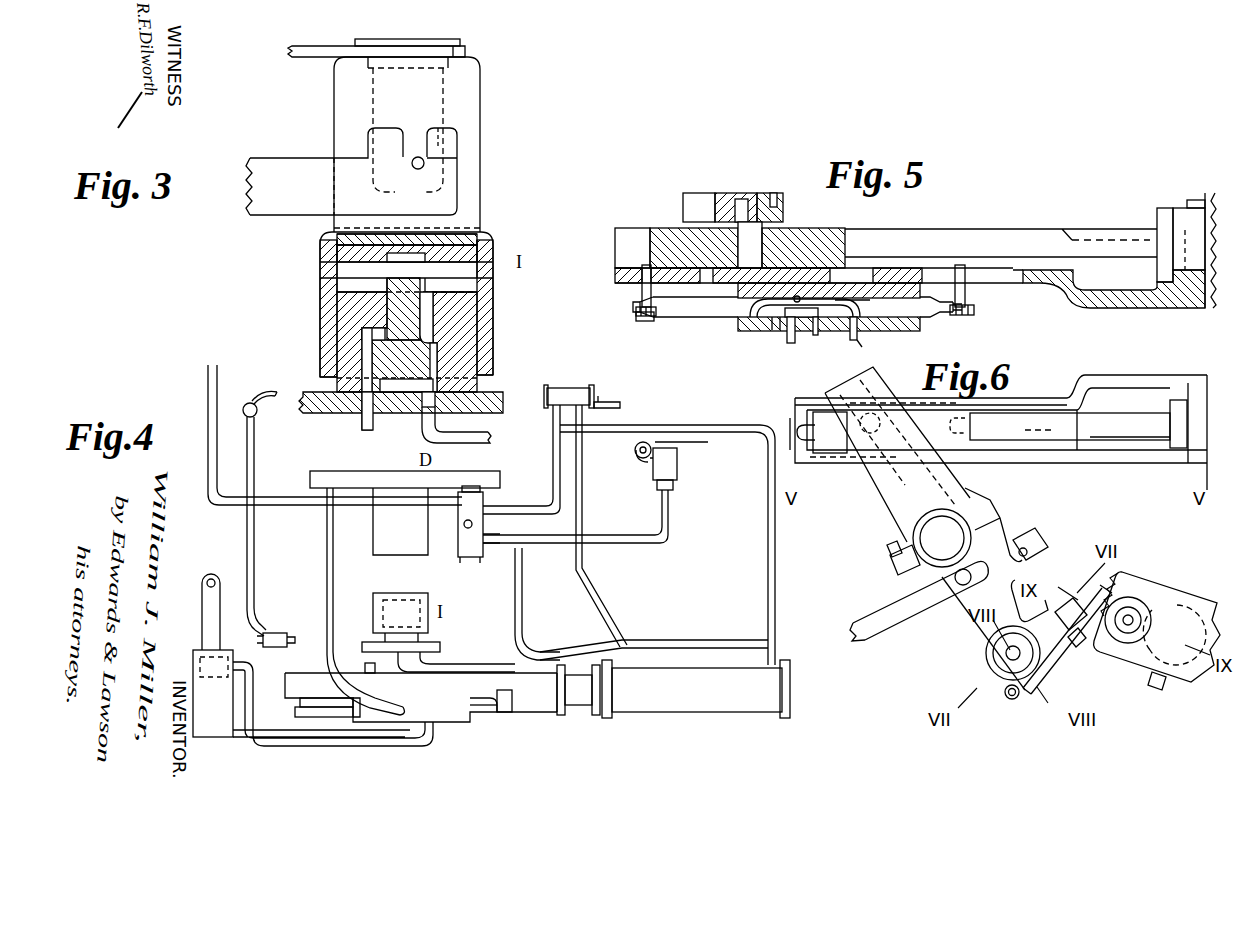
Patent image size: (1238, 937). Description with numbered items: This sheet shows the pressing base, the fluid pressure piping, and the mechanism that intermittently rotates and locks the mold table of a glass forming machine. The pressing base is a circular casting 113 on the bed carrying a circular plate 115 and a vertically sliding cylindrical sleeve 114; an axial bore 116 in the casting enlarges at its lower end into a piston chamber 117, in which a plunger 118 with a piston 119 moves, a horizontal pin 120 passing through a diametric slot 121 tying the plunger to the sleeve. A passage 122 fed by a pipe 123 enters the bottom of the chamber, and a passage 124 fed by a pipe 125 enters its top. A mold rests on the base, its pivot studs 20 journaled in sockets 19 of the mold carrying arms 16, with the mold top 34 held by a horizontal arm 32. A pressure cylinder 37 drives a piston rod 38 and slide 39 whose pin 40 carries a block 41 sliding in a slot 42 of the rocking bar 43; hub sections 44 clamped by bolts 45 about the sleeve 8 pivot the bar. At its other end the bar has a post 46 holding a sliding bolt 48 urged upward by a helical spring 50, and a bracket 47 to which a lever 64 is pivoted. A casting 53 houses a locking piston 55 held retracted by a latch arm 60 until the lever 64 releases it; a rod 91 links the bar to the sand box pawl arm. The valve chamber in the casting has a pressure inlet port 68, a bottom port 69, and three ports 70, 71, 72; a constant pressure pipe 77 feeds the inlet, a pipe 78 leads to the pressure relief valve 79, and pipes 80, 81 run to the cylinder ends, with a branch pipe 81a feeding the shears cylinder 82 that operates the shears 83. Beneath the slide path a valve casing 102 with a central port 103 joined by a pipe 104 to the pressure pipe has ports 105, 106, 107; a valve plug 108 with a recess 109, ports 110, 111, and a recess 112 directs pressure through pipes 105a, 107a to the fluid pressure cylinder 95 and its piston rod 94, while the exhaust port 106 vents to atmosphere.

In FIG. 6, the sleeve 8 is at (936, 464).
In FIG. 3, the mold carrying arms 16 is at (351, 171).
In FIG. 3, the journal sockets 19 is at (427, 147).
In FIG. 3, the pivot studs 20 is at (425, 165).
In FIG. 3, the horizontal arm 32 is at (306, 46).
In FIG. 3, the mold top 34 is at (396, 32).
In FIG. 4, the pressure cylinder 37 is at (696, 689).
In FIG. 5, the pressure cylinder 37 is at (1179, 208).
In FIG. 6, the pressure cylinder 37 is at (1180, 400).
In FIG. 4, the piston rod 38 is at (555, 712).
In FIG. 5, the piston rod 38 is at (976, 232).
In FIG. 6, the piston rod 38 is at (1117, 420).
In FIG. 5, the slide 39 is at (808, 228).
In FIG. 6, the slide 39 is at (868, 458).
In FIG. 4, the pin 40 is at (374, 668).
In FIG. 5, the pin 40 is at (700, 232).
In FIG. 6, the pin 40 is at (880, 478).
In FIG. 5, the block 41 is at (775, 205).
In FIG. 6, the block 41 is at (838, 432).
In FIG. 5, the slot 42 is at (745, 195).
In FIG. 6, the slot 42 is at (895, 505).
In FIG. 5, the rocking bar 43 is at (708, 193).
In FIG. 6, the rocking bar 43 is at (900, 520).
In FIG. 6, the hub sections 44 is at (897, 568).
In FIG. 6, the bolts 45 is at (887, 550).
In FIG. 6, the post 46 is at (1008, 655).
In FIG. 6, the bracket 47 is at (1070, 596).
In FIG. 6, the sliding bolt 48 is at (1010, 657).
In FIG. 6, the helical spring 50 is at (1006, 696).
In FIG. 6, the casting 53 is at (1167, 583).
In FIG. 6, the piston 55 is at (1127, 626).
In FIG. 6, the latch arm 60 is at (1130, 612).
In FIG. 6, the lever 64 is at (1067, 639).
In FIG. 4, the pressure inlet port 68 is at (483, 500).
In FIG. 4, the port 69 is at (466, 558).
In FIG. 4, the port 70 is at (474, 510).
In FIG. 4, the port 71 is at (464, 526).
In FIG. 4, the port 72 is at (478, 542).
In FIG. 4, the constant fluid pressure pipe 77 is at (308, 497).
In FIG. 4, the pipe 78 is at (500, 557).
In FIG. 4, the pressure relief valve 79 is at (677, 468).
In FIG. 4, the pipe 80 is at (553, 452).
In FIG. 4, the pipe 81 is at (530, 531).
In FIG. 4, the branch pipe 81a is at (585, 510).
In FIG. 4, the shears cylinder 82 is at (575, 381).
In FIG. 4, the shears 83 is at (618, 397).
In FIG. 6, the rod 91 is at (898, 623).
In FIG. 4, the piston rod 94 is at (212, 606).
In FIG. 4, the fluid pressure cylinder 95 is at (213, 693).
In FIG. 4, the valve casing 102 is at (472, 724).
In FIG. 5, the valve casing 102 is at (754, 333).
In FIG. 5, the central port 103 is at (800, 297).
In FIG. 4, the pipe 104 is at (352, 583).
In FIG. 5, the port 105 is at (781, 333).
In FIG. 4, the pipe 105a is at (243, 740).
In FIG. 5, the pipe 105a is at (773, 331).
In FIG. 5, the exhaust port 106 is at (816, 333).
In FIG. 5, the port 107 is at (858, 331).
In FIG. 4, the pipe 107a is at (358, 746).
In FIG. 5, the pipe 107a is at (883, 353).
In FIG. 4, the valve plug 108 is at (318, 717).
In FIG. 5, the valve plug 108 is at (685, 307).
In FIG. 5, the recess 109 is at (835, 297).
In FIG. 5, the port 110 is at (748, 318).
In FIG. 5, the port 111 is at (934, 306).
In FIG. 5, the recess 112 is at (797, 338).
In FIG. 3, the casting 113 is at (494, 305).
In FIG. 4, the casting 113 is at (521, 715).
In FIG. 5, the casting 113 is at (642, 295).
In FIG. 3, the cylindrical sleeve 114 is at (493, 322).
In FIG. 3, the circular plate 115 is at (490, 235).
In FIG. 3, the axial bore 116 is at (478, 288).
In FIG. 3, the piston chamber 117 is at (407, 392).
In FIG. 3, the plunger 118 is at (436, 346).
In FIG. 3, the piston 119 is at (437, 357).
In FIG. 3, the horizontal pin 120 is at (320, 270).
In FIG. 3, the diametric slot 121 is at (342, 284).
In FIG. 3, the passage 122 is at (472, 390).
In FIG. 3, the pipe 123 is at (475, 437).
In FIG. 4, the pipe 123 is at (476, 652).
In FIG. 3, the passage 124 is at (362, 357).
In FIG. 3, the pipe 125 is at (362, 425).
In FIG. 4, the pipe 125 is at (558, 650).